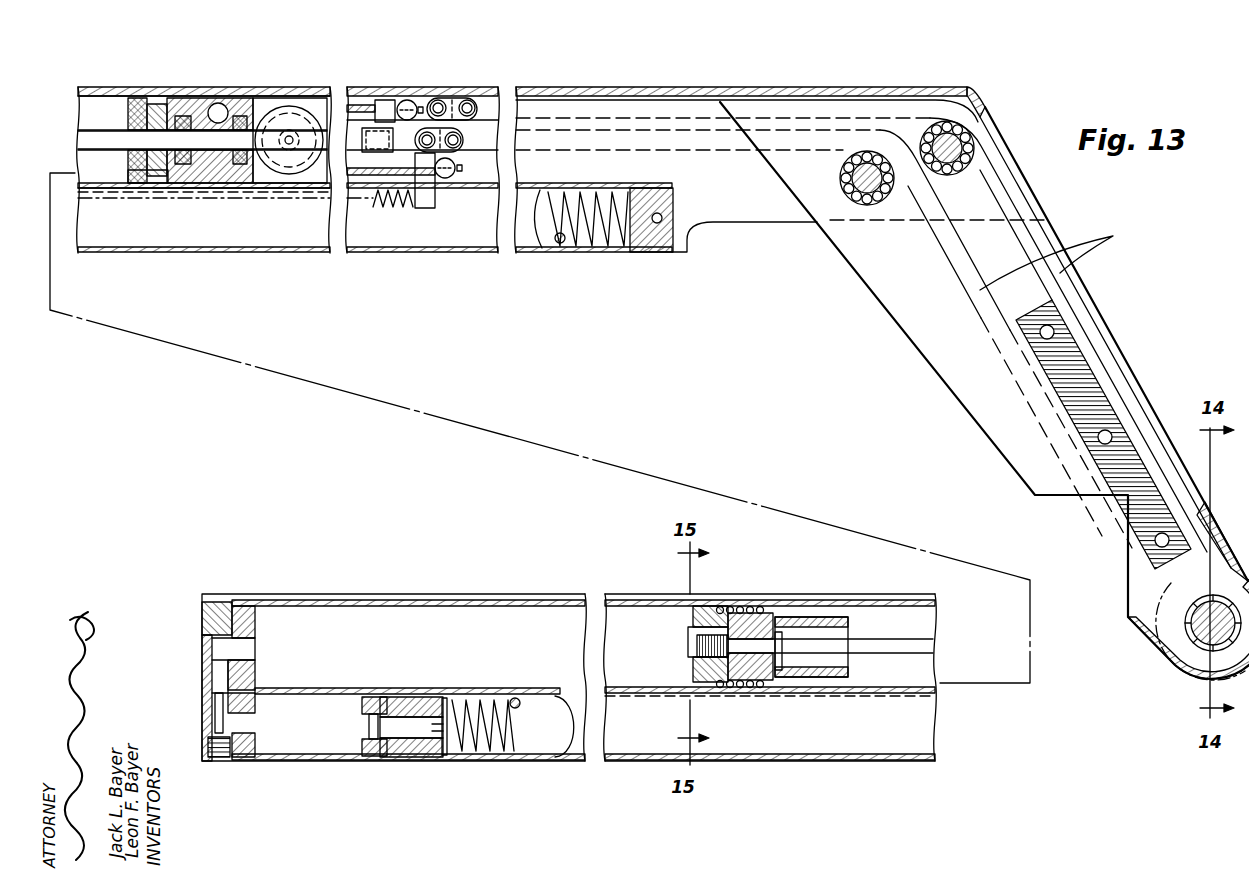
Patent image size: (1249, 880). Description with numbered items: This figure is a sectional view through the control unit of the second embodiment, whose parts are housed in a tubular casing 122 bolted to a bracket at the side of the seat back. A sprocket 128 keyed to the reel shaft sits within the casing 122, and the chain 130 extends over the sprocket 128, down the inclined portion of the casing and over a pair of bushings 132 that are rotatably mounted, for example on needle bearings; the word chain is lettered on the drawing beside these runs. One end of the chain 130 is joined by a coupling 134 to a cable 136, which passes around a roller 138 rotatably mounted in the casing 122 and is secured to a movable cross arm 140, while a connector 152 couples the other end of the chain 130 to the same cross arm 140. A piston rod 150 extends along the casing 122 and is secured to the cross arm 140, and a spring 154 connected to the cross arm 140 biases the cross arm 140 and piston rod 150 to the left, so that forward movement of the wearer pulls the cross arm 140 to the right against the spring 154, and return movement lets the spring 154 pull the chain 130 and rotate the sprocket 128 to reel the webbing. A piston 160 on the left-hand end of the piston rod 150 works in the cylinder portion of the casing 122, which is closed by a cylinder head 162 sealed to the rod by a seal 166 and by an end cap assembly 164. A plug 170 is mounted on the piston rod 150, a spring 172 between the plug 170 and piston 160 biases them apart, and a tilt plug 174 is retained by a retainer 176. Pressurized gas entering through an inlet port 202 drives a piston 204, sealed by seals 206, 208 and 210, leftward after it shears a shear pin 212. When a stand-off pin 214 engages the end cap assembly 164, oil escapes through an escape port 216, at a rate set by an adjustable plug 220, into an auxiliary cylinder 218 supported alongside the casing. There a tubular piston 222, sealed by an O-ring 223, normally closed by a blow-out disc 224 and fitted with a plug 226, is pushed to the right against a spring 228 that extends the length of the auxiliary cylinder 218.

The tubular casing 122 is at (366, 92).
The sprocket 128 is at (1197, 660).
The chain 130 is at (688, 142).
The bushings 132 is at (970, 134).
The coupling 134 is at (457, 104).
The cable 136 is at (352, 108).
The roller 138 is at (287, 165).
The cross arm 140 is at (428, 182).
The piston rod 150 is at (223, 138).
The connector 152 is at (447, 143).
The spring 154 is at (392, 208).
The piston 160 is at (703, 606).
The cylinder head 162 is at (268, 89).
The end cap assembly 164 is at (203, 653).
The seal 166 is at (204, 218).
The plug 170 is at (770, 620).
The spring 172 is at (737, 681).
The tilt plug 174 is at (827, 677).
The retainer 176 is at (782, 673).
The inlet port 202 is at (222, 105).
The piston 204 is at (133, 183).
The seal 206 is at (128, 125).
The seal 208 is at (187, 168).
The seal 210 is at (142, 105).
The shear pin 212 is at (168, 97).
The stand-off pin 214 is at (688, 632).
The escape port 216 is at (240, 647).
The auxiliary cylinder 218 is at (310, 742).
The adjustable plug 220 is at (222, 762).
The piston 222 is at (398, 746).
The O-ring 223 is at (378, 760).
The blow-out disc 224 is at (397, 720).
The plug 226 is at (442, 727).
The spring 228 is at (573, 232).
The element chain is at (1075, 258).